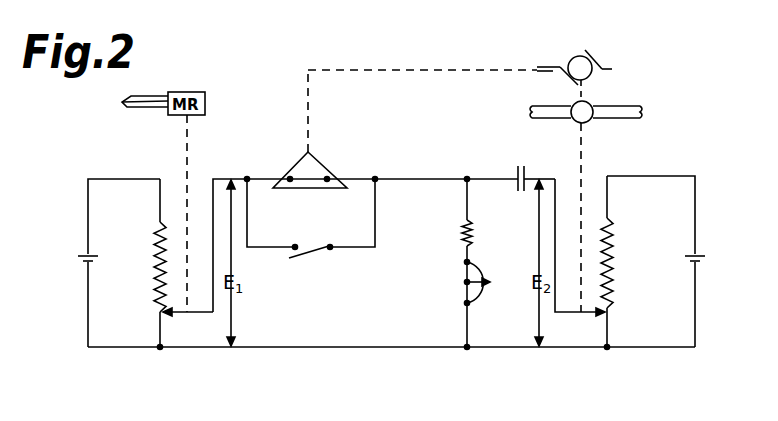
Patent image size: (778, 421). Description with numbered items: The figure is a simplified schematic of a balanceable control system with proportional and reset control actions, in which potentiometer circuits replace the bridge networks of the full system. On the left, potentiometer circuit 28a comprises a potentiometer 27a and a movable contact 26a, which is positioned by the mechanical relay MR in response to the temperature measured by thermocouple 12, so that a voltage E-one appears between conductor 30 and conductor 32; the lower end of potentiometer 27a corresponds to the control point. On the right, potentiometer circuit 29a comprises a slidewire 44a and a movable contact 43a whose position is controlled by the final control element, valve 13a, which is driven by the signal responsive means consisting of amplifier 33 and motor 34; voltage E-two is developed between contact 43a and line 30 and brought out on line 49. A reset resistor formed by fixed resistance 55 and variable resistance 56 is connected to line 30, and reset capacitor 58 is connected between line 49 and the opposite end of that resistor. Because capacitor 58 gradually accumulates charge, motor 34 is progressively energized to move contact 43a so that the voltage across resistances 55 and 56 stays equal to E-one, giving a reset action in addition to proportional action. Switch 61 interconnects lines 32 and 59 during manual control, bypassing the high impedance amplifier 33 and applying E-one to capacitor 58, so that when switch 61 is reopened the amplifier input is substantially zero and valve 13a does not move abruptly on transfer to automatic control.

The thermocouple 12 is at (121, 104).
The valve 13a is at (594, 103).
The movable contact 26a is at (197, 313).
The potentiometer 27a is at (153, 275).
The potentiometer circuit 28a is at (141, 219).
The potentiometer circuit 29a is at (665, 217).
The conductor 30 is at (512, 348).
The conductor 32 is at (225, 176).
The amplifier 33 is at (325, 167).
The motor 34 is at (601, 69).
The movable contact 43a is at (590, 313).
The slidewire 44a is at (611, 276).
The line 49 is at (557, 228).
The fixed resistance 55 is at (460, 223).
The variable resistance 56 is at (483, 264).
The reset capacitor 58 is at (527, 168).
The line 59 is at (422, 177).
The switch 61 is at (313, 253).